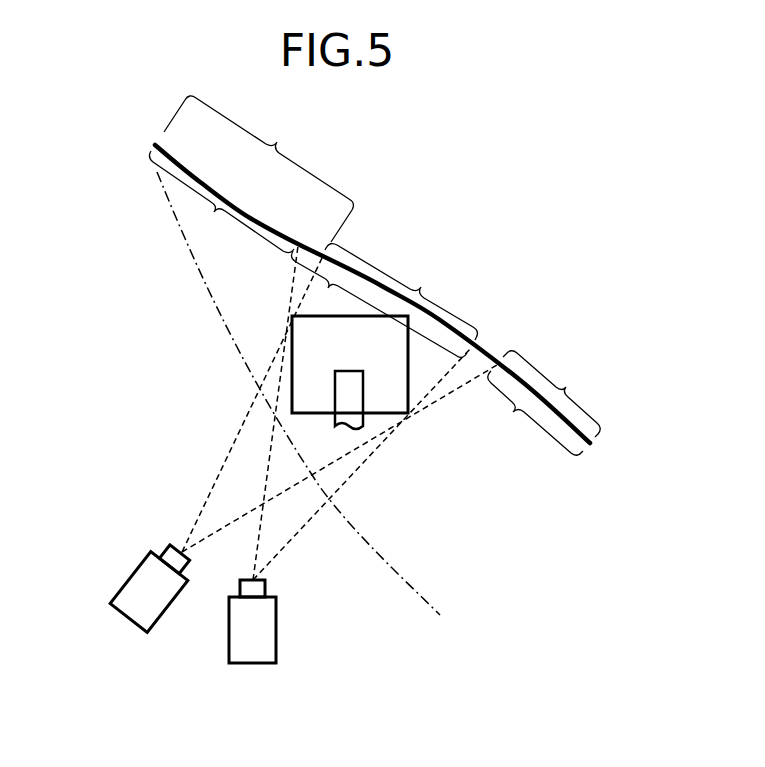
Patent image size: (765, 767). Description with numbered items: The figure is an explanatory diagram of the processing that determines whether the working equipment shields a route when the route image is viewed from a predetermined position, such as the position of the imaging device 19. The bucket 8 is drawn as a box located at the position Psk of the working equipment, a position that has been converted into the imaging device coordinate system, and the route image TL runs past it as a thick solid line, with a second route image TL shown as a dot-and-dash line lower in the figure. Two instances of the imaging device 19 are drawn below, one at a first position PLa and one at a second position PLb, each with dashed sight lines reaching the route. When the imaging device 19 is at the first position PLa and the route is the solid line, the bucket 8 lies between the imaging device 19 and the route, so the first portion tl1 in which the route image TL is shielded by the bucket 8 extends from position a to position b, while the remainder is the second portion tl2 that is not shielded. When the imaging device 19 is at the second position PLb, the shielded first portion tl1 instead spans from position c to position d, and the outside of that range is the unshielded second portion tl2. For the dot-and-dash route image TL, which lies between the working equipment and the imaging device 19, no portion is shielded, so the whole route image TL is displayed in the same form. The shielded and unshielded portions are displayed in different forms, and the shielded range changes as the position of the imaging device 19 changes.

The bucket 8 is at (387, 398).
The imaging device 19 is at (288, 500).
The first position PLa is at (256, 686).
The second position PLb is at (113, 642).
The route image TL is at (191, 181).
The first portion tl1 is at (385, 301).
The second portion tl2 is at (374, 275).
The position of the working equipment Psk is at (372, 347).
The position a is at (298, 243).
The position b is at (471, 347).
The position c is at (323, 250).
The position d is at (499, 362).